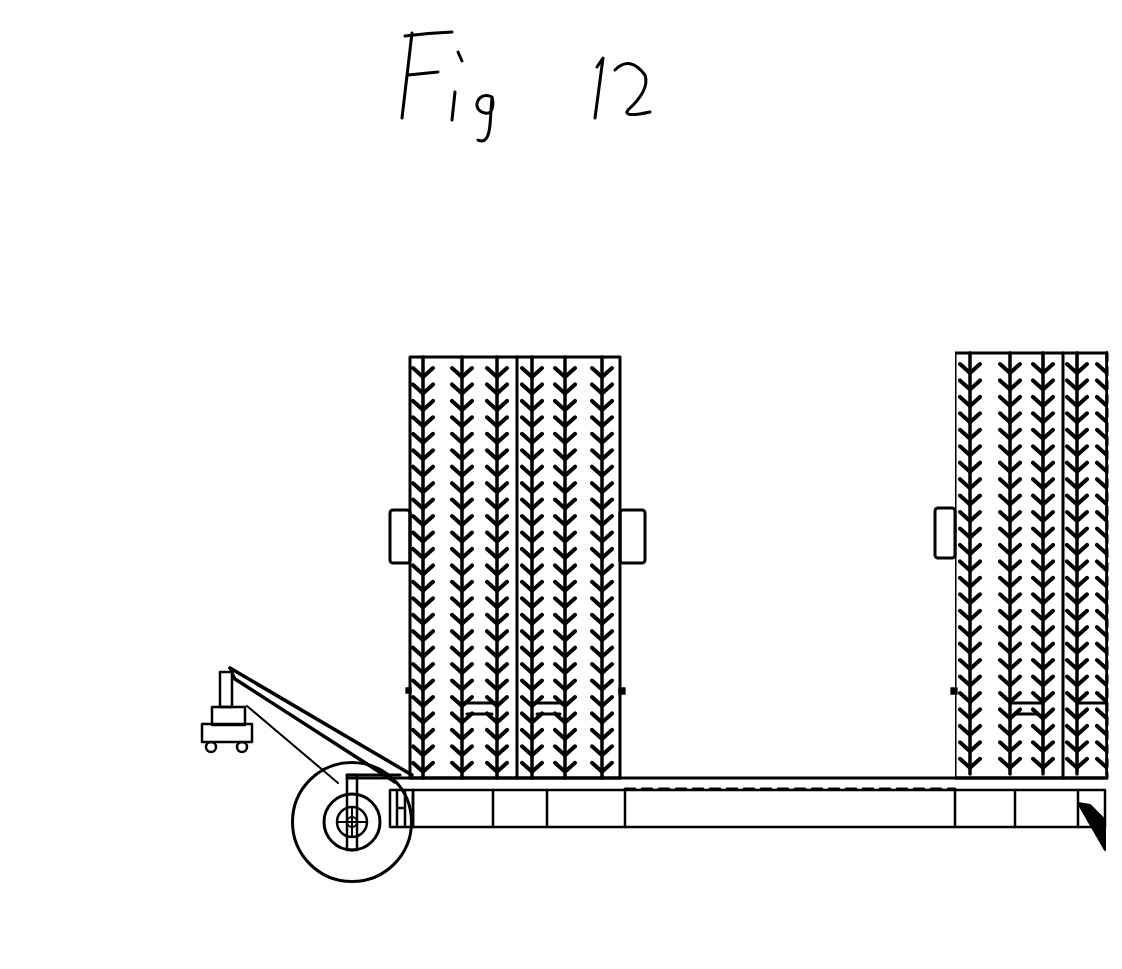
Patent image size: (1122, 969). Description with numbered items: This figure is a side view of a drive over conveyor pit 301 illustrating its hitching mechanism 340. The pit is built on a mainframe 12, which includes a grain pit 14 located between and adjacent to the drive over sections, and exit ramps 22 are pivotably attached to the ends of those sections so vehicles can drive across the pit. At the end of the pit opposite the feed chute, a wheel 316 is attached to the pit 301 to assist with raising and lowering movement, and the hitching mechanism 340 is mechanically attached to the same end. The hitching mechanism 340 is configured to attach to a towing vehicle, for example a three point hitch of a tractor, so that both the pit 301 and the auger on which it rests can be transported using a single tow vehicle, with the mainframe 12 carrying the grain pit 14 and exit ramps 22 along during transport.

The mainframe 12 is at (525, 827).
The grain pit 14 is at (735, 778).
The exit ramps 22 is at (622, 423).
The drive over conveyor pit 301 is at (802, 418).
The wheel 316 is at (320, 855).
The hitching mechanism 340 is at (233, 672).